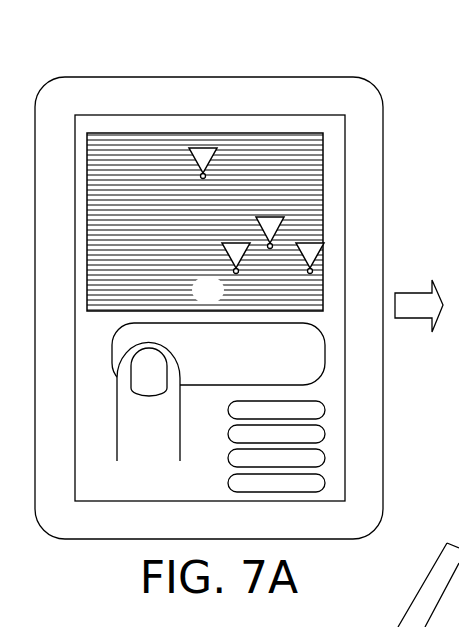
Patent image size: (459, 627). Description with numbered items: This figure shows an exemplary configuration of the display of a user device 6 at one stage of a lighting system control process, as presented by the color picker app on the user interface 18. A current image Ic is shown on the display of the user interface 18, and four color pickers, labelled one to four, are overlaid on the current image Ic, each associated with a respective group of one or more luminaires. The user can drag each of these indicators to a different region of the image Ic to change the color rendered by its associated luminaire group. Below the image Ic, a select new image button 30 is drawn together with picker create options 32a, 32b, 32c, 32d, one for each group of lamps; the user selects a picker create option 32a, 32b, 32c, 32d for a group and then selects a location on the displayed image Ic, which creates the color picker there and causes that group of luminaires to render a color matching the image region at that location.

The portable terminal 6 is at (97, 100).
The current image Ic is at (161, 147).
The user interface 18 is at (256, 115).
The select new image button 30 is at (303, 371).
The picker create option 32a is at (310, 412).
The picker create option 32b is at (310, 436).
The picker create option 32c is at (310, 460).
The picker create option 32d is at (310, 485).